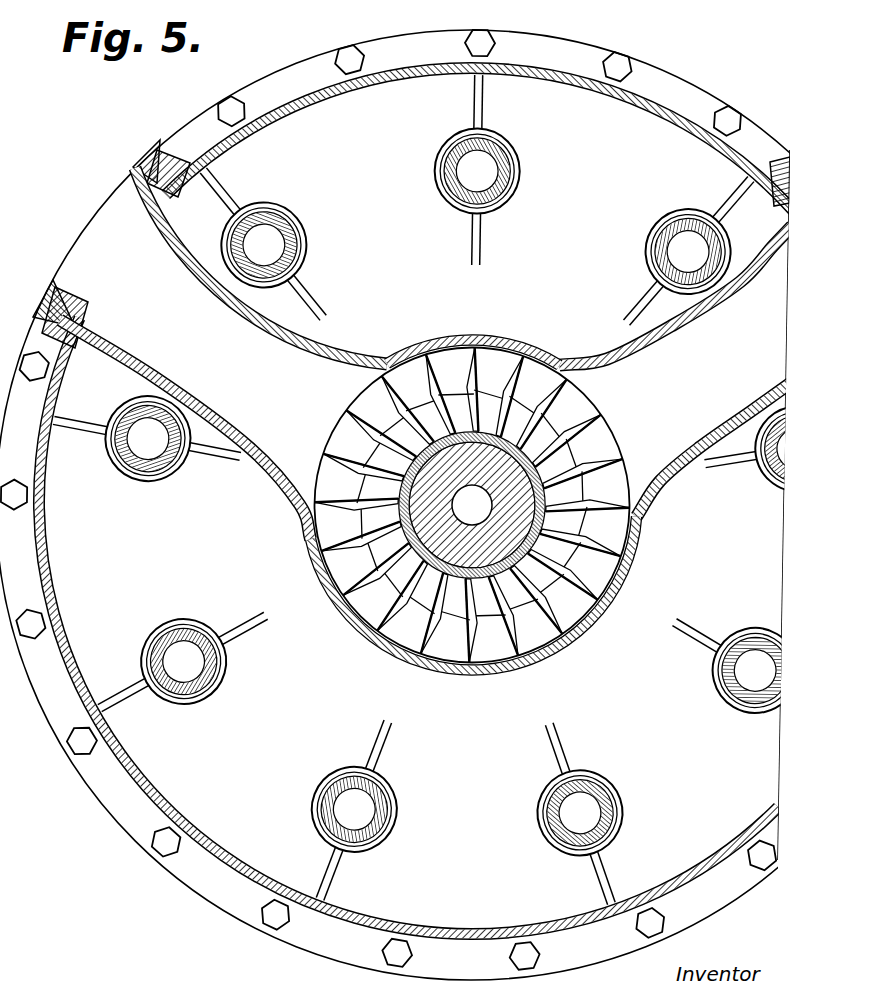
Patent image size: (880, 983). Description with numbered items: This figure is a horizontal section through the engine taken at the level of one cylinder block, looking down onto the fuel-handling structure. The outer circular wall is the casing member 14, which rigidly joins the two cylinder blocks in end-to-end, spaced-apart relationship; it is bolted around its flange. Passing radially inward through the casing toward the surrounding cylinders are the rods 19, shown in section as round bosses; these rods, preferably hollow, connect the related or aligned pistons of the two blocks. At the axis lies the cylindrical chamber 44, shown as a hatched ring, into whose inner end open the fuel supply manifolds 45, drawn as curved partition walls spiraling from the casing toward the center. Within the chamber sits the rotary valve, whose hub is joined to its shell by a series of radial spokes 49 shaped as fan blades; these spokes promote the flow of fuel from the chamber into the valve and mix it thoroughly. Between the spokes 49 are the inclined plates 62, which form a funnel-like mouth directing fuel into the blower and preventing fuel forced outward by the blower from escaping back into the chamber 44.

The casing member 14 is at (155, 800).
The rod 19 is at (521, 176).
The cylindrical chamber 44 is at (476, 657).
The fuel supply manifold 45 is at (426, 353).
The radial spoke 49 is at (382, 589).
The inclined plate 62 is at (586, 427).